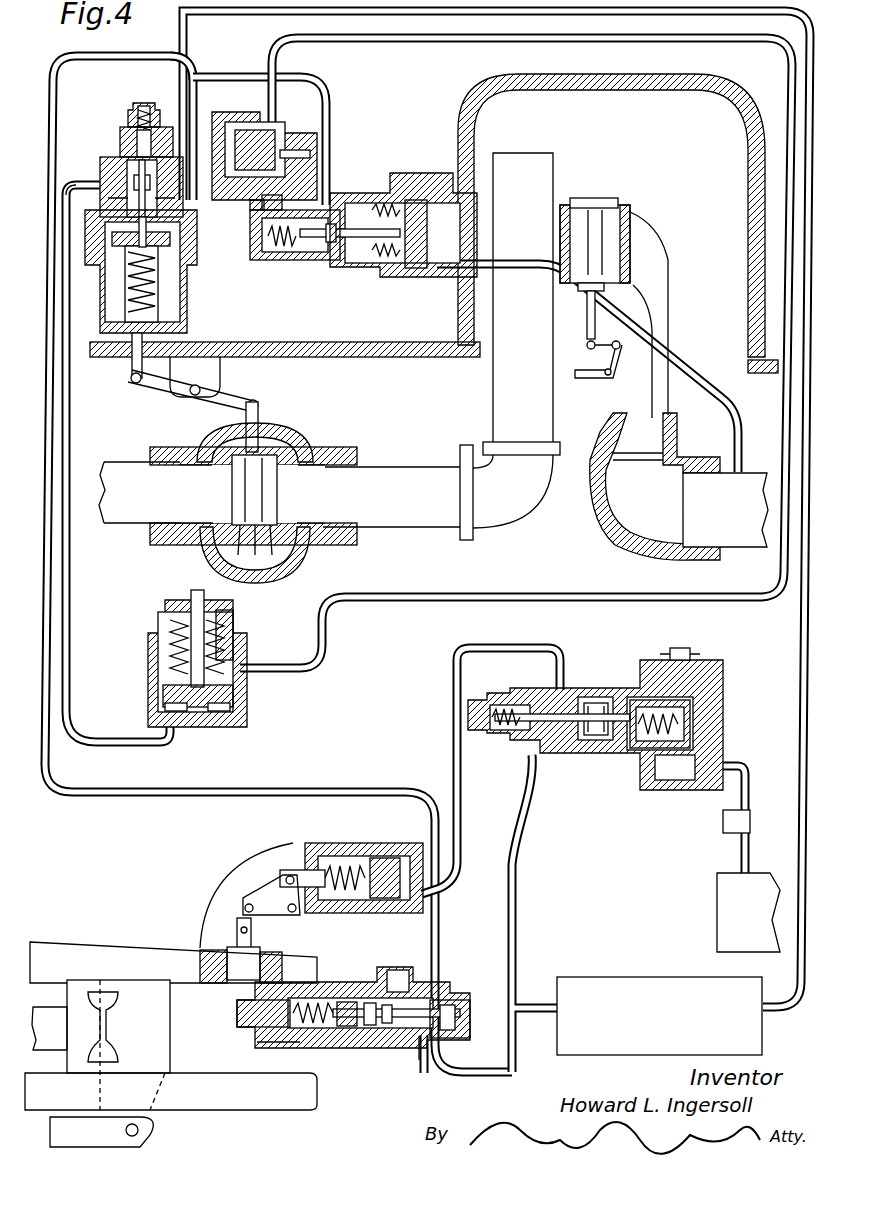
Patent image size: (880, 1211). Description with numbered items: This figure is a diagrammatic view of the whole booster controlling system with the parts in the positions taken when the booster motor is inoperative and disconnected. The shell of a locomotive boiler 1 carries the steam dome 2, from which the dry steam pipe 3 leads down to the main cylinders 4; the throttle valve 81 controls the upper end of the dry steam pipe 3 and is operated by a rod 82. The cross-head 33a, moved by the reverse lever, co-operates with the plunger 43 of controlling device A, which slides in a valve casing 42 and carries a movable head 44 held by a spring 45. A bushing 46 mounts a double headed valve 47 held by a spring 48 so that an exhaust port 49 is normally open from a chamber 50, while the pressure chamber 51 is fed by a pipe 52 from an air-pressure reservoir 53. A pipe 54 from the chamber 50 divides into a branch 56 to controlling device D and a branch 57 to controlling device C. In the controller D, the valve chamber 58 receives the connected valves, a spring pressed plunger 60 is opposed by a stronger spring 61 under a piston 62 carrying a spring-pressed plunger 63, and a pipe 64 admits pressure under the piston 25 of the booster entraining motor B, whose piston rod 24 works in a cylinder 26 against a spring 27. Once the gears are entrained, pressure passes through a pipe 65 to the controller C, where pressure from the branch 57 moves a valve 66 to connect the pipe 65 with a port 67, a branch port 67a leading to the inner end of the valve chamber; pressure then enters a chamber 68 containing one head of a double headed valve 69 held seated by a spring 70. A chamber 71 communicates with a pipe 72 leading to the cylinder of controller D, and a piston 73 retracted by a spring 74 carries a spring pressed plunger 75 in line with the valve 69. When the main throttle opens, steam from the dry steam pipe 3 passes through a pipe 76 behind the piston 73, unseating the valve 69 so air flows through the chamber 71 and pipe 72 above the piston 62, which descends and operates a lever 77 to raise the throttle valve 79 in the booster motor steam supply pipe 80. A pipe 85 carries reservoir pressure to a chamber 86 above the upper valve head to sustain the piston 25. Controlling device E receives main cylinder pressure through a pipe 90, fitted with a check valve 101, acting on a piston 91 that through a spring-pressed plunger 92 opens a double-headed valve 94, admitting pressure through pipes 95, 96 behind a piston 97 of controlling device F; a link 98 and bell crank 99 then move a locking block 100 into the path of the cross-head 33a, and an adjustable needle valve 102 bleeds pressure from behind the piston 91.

The shell of a locomotive boiler 1 is at (310, 348).
The steam dome 2 is at (460, 105).
The dry steam pipe 3 is at (679, 486).
The main cylinders 4 is at (717, 918).
The piston rod 24 is at (192, 596).
The piston 25 is at (240, 705).
The cylinder 26 is at (248, 655).
The spring 27 is at (172, 665).
The cross-head 33a is at (165, 1053).
The valve casing 42 is at (282, 1042).
The plunger 43 is at (237, 1012).
The movable head 44 is at (347, 1040).
The spring 45 is at (315, 1035).
The bushing 46 is at (378, 1040).
The double headed valve 47 is at (378, 1040).
The spring 48 is at (455, 1005).
The exhaust port 49 is at (360, 1033).
The chamber 50 is at (398, 981).
The pressure chamber 51 is at (420, 1045).
The pipe 52 is at (466, 1078).
The air-pressure reservoir 53 is at (659, 1016).
The pipe 54 is at (440, 928).
The branch pipe 56 is at (82, 178).
The branch pipe 57 is at (198, 62).
The valve chamber 58 is at (105, 165).
The spring pressed plunger 60 is at (143, 104).
The spring 61 is at (185, 297).
The piston 62 is at (175, 238).
The spring-pressed plunger 63 is at (180, 265).
The pipe 64 is at (70, 710).
The pipe 65 is at (277, 103).
The valve 66 is at (248, 120).
The port 67 is at (282, 205).
The branch port 67a is at (256, 208).
The chamber 68 is at (285, 256).
The double headed valve 69 is at (308, 258).
The spring 70 is at (258, 250).
The chamber 71 is at (331, 248).
The pipe 72 is at (328, 130).
The piston 73 is at (418, 200).
The spring 74 is at (402, 200).
The spring pressed plunger 75 is at (357, 262).
The pipe 76 is at (735, 410).
The lever 77 is at (163, 395).
The throttle valve 79 is at (275, 480).
The booster motor steam supply pipe 80 is at (112, 460).
The throttle valve 81 is at (610, 200).
The rod 82 is at (583, 382).
The pipe 85 is at (790, 1025).
The chamber 86 is at (122, 160).
The pipe 90 is at (748, 856).
The piston 91 is at (713, 690).
The spring-pressed plunger 92 is at (598, 703).
The double-headed valve 94 is at (575, 745).
The pipe 95 is at (518, 866).
The pipe 96 is at (515, 648).
The piston 97 is at (385, 858).
The link 98 is at (300, 872).
The bell crank 99 is at (270, 900).
The locking block 100 is at (243, 963).
The check valve 101 is at (748, 817).
The adjustable needle valve 102 is at (676, 648).
The controlling device A is at (343, 982).
The booster entraining motor B is at (225, 727).
The controlling device C is at (368, 190).
The controlling device D is at (129, 142).
The controlling device E is at (576, 688).
The controlling device F is at (350, 843).